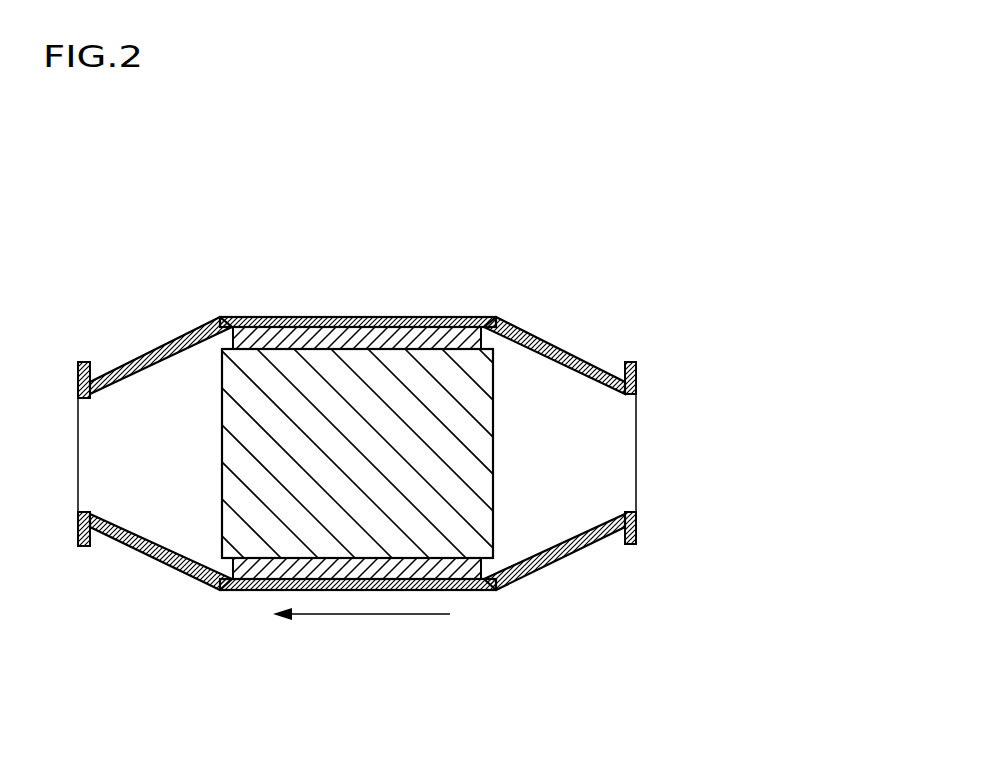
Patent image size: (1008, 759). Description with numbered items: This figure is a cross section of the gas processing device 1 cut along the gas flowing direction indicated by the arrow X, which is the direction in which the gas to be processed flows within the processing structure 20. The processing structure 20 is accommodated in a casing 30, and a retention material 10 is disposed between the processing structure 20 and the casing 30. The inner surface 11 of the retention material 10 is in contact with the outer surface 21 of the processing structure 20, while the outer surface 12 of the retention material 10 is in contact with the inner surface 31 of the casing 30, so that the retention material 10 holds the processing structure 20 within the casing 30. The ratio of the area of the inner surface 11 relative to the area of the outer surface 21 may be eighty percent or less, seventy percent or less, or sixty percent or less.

The gas processing device 1 is at (402, 196).
The retention material 10 is at (247, 337).
The inner surface of the retention material 11 is at (322, 350).
The outer surface of the retention material 12 is at (358, 327).
The processing structure 20 is at (230, 377).
The outer surface of the processing structure 21 is at (287, 346).
The casing 30 is at (463, 319).
The inner surface of the casing 31 is at (416, 332).